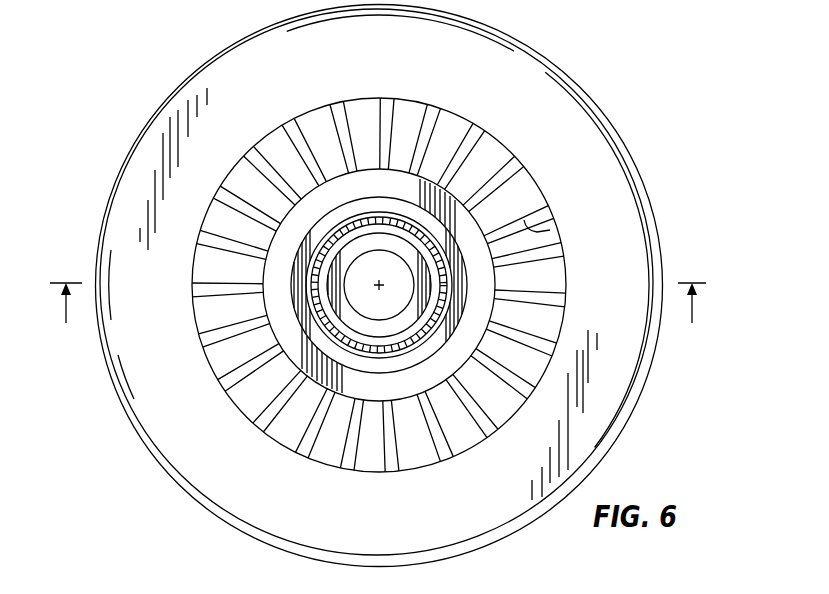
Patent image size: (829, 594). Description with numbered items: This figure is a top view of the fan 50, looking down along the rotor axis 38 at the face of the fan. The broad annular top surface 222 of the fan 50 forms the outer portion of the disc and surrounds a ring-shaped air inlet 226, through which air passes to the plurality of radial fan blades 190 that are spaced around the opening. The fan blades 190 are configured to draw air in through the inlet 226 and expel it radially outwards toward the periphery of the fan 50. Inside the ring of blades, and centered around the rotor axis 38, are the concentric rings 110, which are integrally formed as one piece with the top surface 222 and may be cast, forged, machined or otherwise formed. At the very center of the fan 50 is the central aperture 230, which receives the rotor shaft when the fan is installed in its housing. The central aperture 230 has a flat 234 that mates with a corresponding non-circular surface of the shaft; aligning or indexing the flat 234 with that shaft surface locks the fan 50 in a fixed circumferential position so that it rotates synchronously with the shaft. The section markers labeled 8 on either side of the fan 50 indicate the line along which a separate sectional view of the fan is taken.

The fan 50 is at (133, 70).
The top surface 222 is at (550, 117).
The air inlet 226 is at (505, 200).
The radial fan blades 190 is at (550, 230).
The rotor axis 38 is at (383, 288).
The concentric rings 110 is at (450, 293).
The flat 234 is at (380, 252).
The central aperture 230 is at (367, 297).
The section line 8- 8 is at (378, 315).